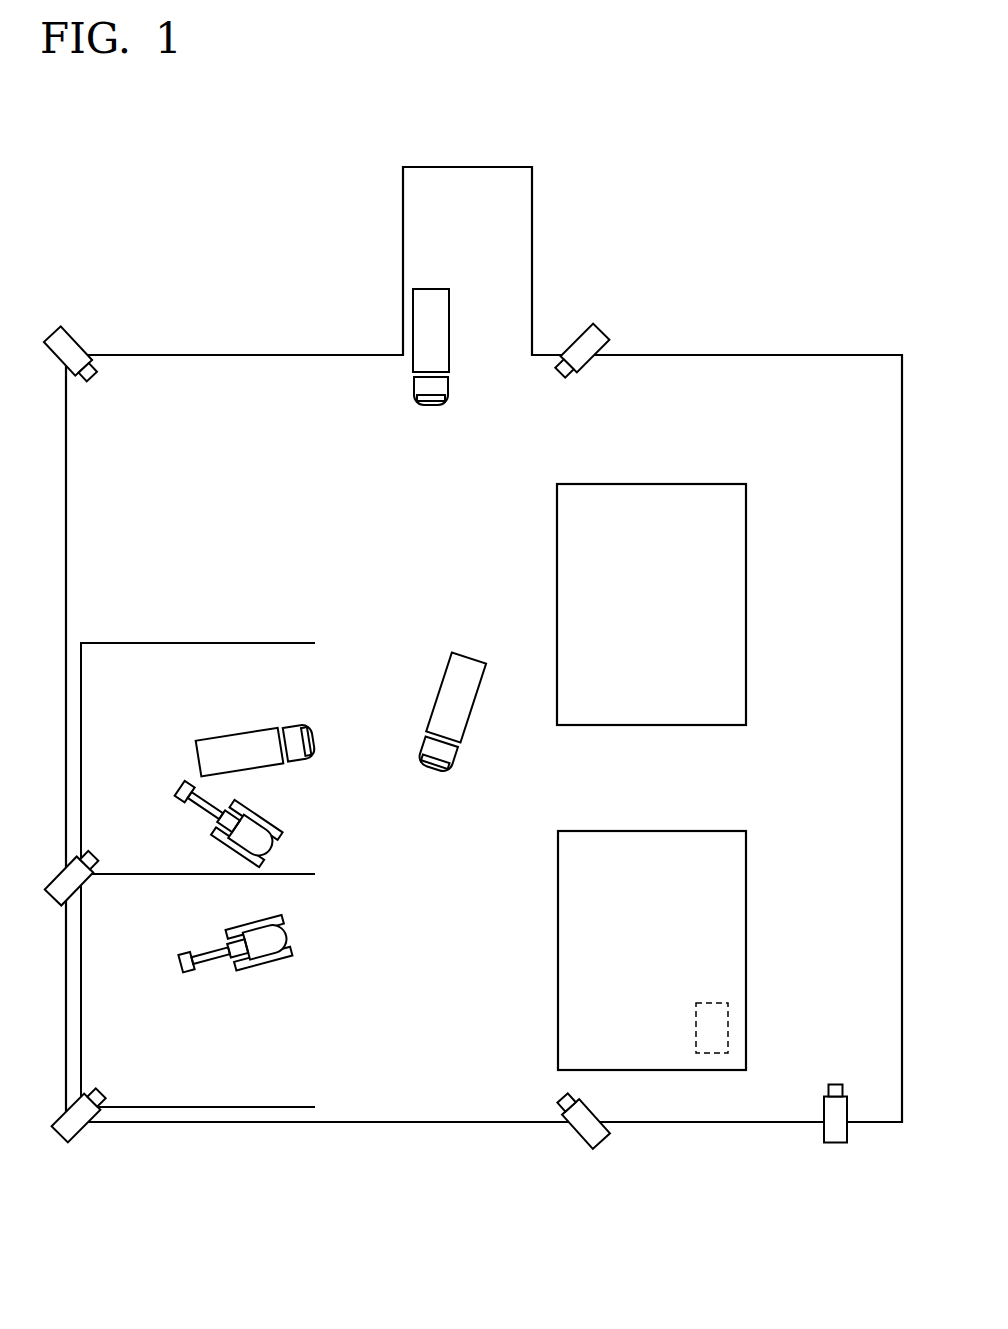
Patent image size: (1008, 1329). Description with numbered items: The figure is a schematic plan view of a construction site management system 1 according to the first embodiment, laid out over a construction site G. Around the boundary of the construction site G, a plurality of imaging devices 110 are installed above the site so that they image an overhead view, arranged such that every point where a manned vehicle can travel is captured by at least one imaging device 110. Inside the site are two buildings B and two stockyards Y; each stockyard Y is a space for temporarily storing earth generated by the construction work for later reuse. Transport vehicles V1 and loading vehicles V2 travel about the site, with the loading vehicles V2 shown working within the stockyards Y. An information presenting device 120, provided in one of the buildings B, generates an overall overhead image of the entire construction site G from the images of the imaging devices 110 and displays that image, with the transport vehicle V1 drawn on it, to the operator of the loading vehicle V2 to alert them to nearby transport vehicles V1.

The construction site management system 1 is at (196, 144).
The imaging device 110 is at (75, 333).
The information presenting device 120 is at (728, 1027).
The building B is at (747, 600).
The construction site G is at (834, 355).
The transport vehicle V1 is at (412, 306).
The loading vehicle V2 is at (270, 820).
The stockyard Y is at (237, 642).